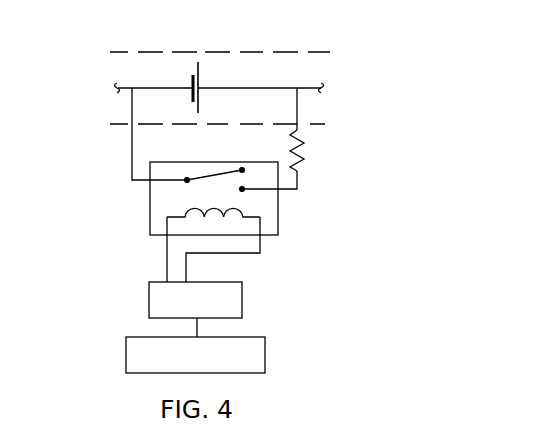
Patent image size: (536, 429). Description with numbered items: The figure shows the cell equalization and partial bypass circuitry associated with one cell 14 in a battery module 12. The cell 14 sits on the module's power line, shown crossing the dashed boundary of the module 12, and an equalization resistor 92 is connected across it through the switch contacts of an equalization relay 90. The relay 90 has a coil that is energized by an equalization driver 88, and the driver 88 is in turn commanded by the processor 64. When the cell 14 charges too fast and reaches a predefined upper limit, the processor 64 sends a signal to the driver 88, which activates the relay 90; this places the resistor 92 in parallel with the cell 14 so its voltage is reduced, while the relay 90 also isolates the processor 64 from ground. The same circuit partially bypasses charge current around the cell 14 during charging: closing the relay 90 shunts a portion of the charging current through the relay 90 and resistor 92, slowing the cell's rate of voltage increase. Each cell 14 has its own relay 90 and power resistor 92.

The battery module 12 is at (218, 52).
The cell 14 is at (192, 70).
The equalization resistor 92 is at (300, 152).
The equalization relay 90 is at (280, 212).
The equalization driver 88 is at (242, 302).
The processor 64 is at (126, 352).